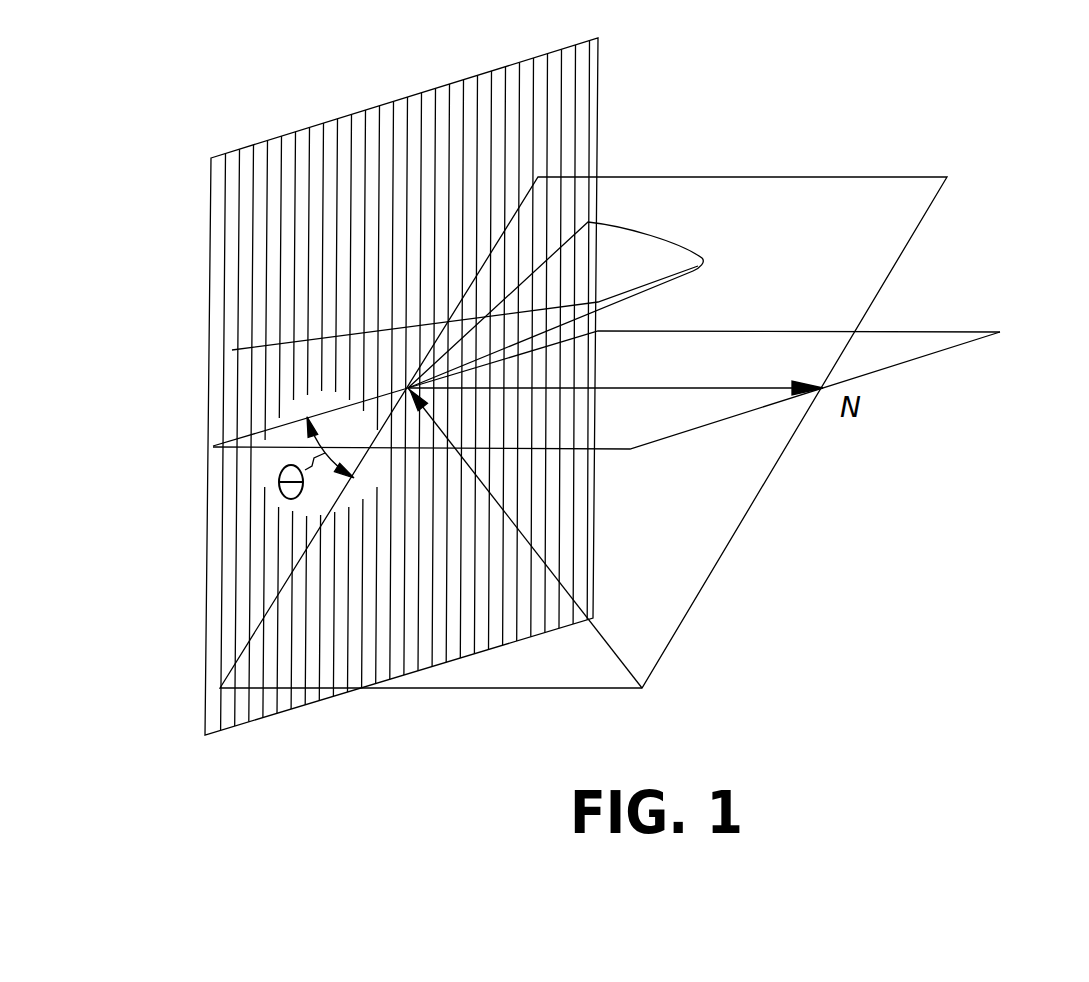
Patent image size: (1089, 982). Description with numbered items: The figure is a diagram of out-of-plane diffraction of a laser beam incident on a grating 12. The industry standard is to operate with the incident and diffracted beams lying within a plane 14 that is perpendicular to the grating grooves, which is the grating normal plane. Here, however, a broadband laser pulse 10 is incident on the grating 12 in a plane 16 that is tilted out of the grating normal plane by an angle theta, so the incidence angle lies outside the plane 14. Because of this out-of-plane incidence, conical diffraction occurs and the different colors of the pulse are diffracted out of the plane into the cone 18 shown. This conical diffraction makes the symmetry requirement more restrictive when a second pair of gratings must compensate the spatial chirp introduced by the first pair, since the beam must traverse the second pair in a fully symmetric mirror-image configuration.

The broadband laser pulse 10 is at (582, 538).
The grating 12 is at (401, 386).
The plane perpendicular to the grating grooves 14 is at (621, 390).
The plane 16 is at (583, 432).
The cone 18 is at (487, 290).